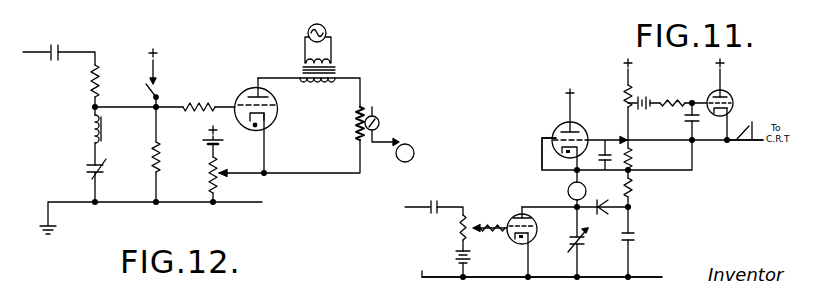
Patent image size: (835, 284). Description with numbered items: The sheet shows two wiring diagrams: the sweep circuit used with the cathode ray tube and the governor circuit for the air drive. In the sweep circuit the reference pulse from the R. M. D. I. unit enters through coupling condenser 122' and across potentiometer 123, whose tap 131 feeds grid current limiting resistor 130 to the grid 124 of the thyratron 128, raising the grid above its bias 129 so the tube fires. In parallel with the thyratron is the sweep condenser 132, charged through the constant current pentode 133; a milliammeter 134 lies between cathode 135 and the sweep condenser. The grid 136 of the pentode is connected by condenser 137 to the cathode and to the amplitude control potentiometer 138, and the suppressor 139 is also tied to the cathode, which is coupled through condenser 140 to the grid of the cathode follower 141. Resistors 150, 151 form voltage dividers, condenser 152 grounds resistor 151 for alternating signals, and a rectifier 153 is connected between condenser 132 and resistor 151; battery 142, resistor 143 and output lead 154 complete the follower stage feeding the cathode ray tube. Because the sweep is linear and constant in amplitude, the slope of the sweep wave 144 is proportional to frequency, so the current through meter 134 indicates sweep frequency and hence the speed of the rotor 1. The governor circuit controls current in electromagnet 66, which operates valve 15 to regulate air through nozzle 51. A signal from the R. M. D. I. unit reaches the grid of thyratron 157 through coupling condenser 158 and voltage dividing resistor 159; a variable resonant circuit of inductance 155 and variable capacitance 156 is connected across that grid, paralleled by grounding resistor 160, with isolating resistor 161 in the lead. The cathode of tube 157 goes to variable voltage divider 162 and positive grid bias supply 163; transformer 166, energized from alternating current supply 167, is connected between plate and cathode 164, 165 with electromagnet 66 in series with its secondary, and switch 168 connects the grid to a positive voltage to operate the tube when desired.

In FIG. 12, the coupling condenser 158 is at (60, 49).
In FIG. 12, the voltage dividing resistor 159 is at (84, 86).
In FIG. 12, the inductance 155 is at (93, 134).
In FIG. 12, the variable capacitance 156 is at (88, 170).
In FIG. 12, the switch 168 is at (150, 86).
In FIG. 12, the isolating resistor 161 is at (191, 103).
In FIG. 12, the grounding resistor 160 is at (154, 143).
In FIG. 12, the positive grid bias supply 163 is at (206, 140).
In FIG. 12, the variable voltage divider 162 is at (209, 176).
In FIG. 12, the thyratron 157 is at (249, 90).
In FIG. 12, the plate 164 is at (268, 98).
In FIG. 12, the cathode 165 is at (271, 117).
In FIG. 12, the transformer 166 is at (340, 70).
In FIG. 12, the alternating current supply 167 is at (328, 30).
In FIG. 12, the electromagnet 66 is at (354, 132).
In FIG. 12, the valve 15 is at (380, 120).
In FIG. 12, the nozzle 51 is at (397, 141).
In FIG. 12, the rotor 1 is at (414, 151).
In FIG. 11, the constant current pentode 133 is at (563, 124).
In FIG. 11, the suppressor 139 is at (553, 130).
In FIG. 11, the grid 136 is at (541, 139).
In FIG. 11, the cathode 135 is at (541, 166).
In FIG. 11, the milliammeter 134 is at (568, 189).
In FIG. 11, the condenser 137 is at (608, 165).
In FIG. 11, the resistor 150 is at (625, 99).
In FIG. 11, the amplitude control potentiometer 138 is at (632, 156).
In FIG. 11, the resistor 151 is at (632, 191).
In FIG. 11, the condenser 152 is at (634, 236).
In FIG. 11, the battery 142 is at (652, 98).
In FIG. 11, the resistor 143 is at (671, 103).
In FIG. 11, the condenser 140 is at (686, 119).
In FIG. 11, the cathode follower 141 is at (731, 95).
In FIG. 11, the sweep wave 144 is at (750, 126).
In FIG. 11, the output lead to C.R.T. 154 is at (750, 141).
In FIG. 11, the rectifier 153 is at (604, 213).
In FIG. 11, the sweep condenser 132 is at (572, 246).
In FIG. 11, the grid 124 is at (518, 243).
In FIG. 11, the thyratron 128 is at (517, 215).
In FIG. 11, the grid current limiting resistor 130 is at (490, 224).
In FIG. 11, the potentiometer 123 is at (460, 228).
In FIG. 11, the tap 131 is at (456, 252).
In FIG. 11, the bias 129 is at (455, 272).
In FIG. 11, the coupling condenser 122' is at (446, 195).